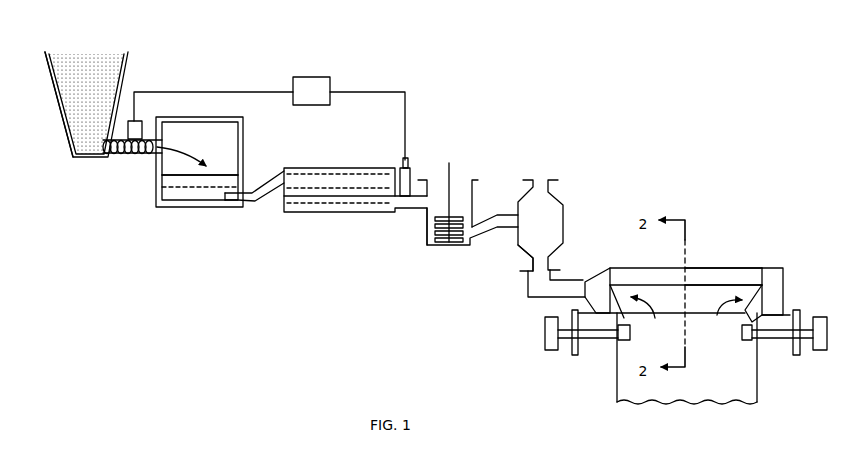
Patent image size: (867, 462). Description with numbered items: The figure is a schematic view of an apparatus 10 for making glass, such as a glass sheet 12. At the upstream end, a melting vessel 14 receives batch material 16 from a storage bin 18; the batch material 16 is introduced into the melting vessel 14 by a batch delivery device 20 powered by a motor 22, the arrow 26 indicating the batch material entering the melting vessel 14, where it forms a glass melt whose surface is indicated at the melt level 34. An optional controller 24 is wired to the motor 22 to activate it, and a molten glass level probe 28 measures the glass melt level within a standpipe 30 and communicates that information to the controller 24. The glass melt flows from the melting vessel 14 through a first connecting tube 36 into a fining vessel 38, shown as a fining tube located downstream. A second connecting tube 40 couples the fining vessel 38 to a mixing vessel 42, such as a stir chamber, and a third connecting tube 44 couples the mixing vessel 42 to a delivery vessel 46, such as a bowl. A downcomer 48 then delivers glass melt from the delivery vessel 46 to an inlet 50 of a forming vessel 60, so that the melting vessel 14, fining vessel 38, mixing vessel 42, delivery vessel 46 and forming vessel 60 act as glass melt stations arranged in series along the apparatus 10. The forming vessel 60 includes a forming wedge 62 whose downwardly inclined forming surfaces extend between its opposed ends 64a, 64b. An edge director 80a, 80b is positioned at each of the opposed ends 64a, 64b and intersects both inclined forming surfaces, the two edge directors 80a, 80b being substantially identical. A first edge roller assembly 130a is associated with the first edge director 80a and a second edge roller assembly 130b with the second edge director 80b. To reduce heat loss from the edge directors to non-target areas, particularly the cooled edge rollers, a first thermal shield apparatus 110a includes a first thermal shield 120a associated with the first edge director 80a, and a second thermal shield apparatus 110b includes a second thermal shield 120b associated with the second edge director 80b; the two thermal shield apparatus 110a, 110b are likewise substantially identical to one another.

The apparatus 10 is at (571, 97).
The glass sheet 12 is at (617, 393).
The melting vessel 14 is at (183, 224).
The batch material 16 is at (81, 55).
The storage bin 18 is at (57, 107).
The batch delivery device 20 is at (120, 153).
The motor 22 is at (140, 120).
The controller 24 is at (310, 77).
The material flow 26 is at (177, 147).
The molten glass level probe 28 is at (402, 160).
The standpipe 30 is at (412, 176).
The melt level 34 is at (222, 177).
The first connecting tube 36 is at (268, 178).
The fining vessel 38 is at (335, 168).
The second connecting tube 40 is at (413, 208).
The mixing vessel 42 is at (478, 182).
The third connecting tube 44 is at (480, 238).
The delivery vessel 46 is at (564, 204).
The downcomer 48 is at (531, 263).
The inlet 50 is at (526, 283).
The forming vessel 60 is at (719, 227).
The forming wedge 62 is at (617, 248).
The first opposed end of the forming wedge 64a is at (627, 279).
The second opposed end of the forming wedge 64b is at (753, 280).
The first edge director 80a is at (651, 318).
The second edge director 80b is at (722, 320).
The first thermal shield apparatus 110a is at (557, 312).
The second thermal shield apparatus 110b is at (814, 308).
The first thermal shield 120a is at (589, 295).
The second thermal shield 120b is at (775, 310).
The first edge roller assembly 130a is at (582, 358).
The second edge roller assembly 130b is at (787, 358).